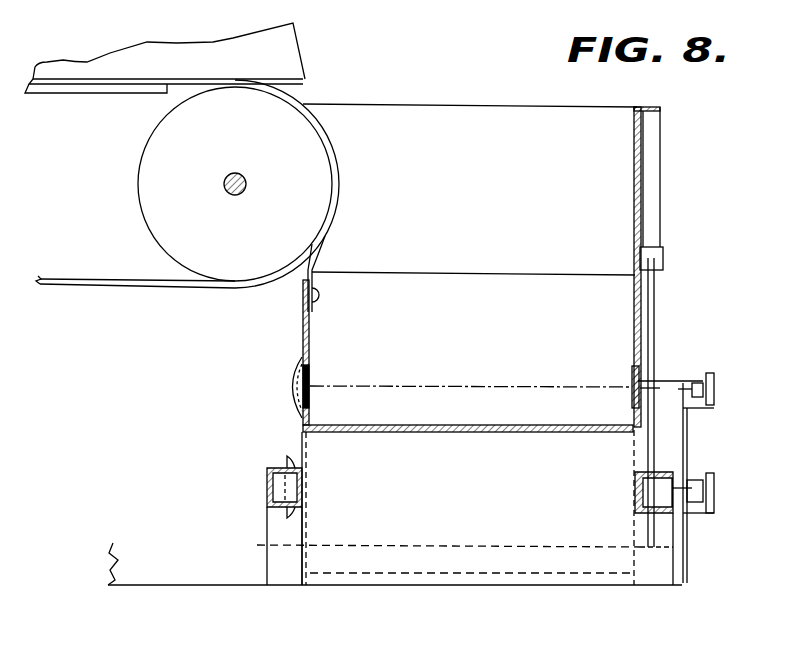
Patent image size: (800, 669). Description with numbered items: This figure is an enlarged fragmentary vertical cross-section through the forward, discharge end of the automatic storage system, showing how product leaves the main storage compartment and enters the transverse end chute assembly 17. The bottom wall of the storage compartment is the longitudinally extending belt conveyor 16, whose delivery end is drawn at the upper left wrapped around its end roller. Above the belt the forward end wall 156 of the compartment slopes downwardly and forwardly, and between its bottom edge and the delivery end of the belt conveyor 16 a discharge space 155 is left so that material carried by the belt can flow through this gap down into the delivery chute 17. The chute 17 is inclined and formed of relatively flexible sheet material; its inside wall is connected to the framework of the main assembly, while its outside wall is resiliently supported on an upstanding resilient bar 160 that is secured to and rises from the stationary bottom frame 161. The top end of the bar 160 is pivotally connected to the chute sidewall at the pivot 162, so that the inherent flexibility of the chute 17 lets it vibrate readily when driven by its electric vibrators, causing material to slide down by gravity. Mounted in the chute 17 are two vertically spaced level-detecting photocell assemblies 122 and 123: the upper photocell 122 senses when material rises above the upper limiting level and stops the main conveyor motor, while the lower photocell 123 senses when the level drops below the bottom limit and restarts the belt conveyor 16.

The belt conveyor 16 is at (64, 79).
The forward end wall 156 is at (299, 42).
The discharge space 155 is at (298, 90).
The transverse end chute assembly 17 is at (642, 160).
The pivotal connection 162 is at (663, 258).
The resilient bar 160 is at (650, 330).
The upper photocell assembly 122 is at (697, 380).
The lower photocell assembly 123 is at (695, 487).
The stationary bottom frame 161 is at (280, 580).